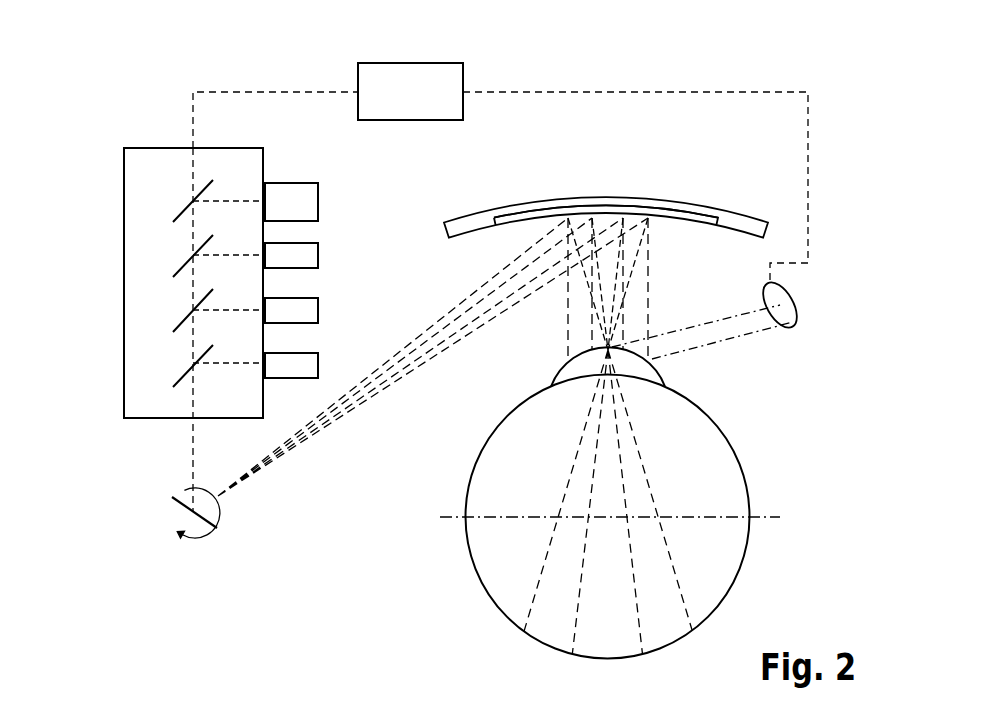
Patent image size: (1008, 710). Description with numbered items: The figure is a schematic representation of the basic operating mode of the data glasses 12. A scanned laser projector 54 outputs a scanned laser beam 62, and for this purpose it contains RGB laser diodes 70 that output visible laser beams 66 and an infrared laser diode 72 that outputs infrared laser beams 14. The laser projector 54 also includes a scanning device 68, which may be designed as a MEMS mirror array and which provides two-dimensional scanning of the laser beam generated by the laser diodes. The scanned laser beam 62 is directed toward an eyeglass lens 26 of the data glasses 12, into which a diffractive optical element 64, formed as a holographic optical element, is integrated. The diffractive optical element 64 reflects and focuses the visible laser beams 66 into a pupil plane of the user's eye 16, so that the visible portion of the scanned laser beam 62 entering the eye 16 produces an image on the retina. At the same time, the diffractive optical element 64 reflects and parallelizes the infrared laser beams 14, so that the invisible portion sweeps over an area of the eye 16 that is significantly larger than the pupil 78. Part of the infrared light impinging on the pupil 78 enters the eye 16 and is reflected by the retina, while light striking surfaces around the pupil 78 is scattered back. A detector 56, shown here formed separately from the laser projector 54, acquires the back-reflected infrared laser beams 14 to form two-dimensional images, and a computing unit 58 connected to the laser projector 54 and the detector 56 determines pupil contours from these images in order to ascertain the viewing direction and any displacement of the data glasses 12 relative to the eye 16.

The data glasses 12 is at (638, 181).
The infrared laser beams 14 is at (645, 312).
The eye 16 is at (716, 446).
The eyeglass lens 26 is at (687, 214).
The laser projector 54 is at (124, 172).
The detector 56 is at (801, 303).
The computing unit 58 is at (358, 72).
The scanned laser beam 62 is at (303, 452).
The diffractive optical element 64 is at (650, 214).
The visible laser beams 66 is at (642, 249).
The scanning device 68 is at (175, 508).
The RGB laser diodes 70 is at (318, 257).
The infrared laser diode 72 is at (318, 200).
The pupil 78 is at (662, 372).